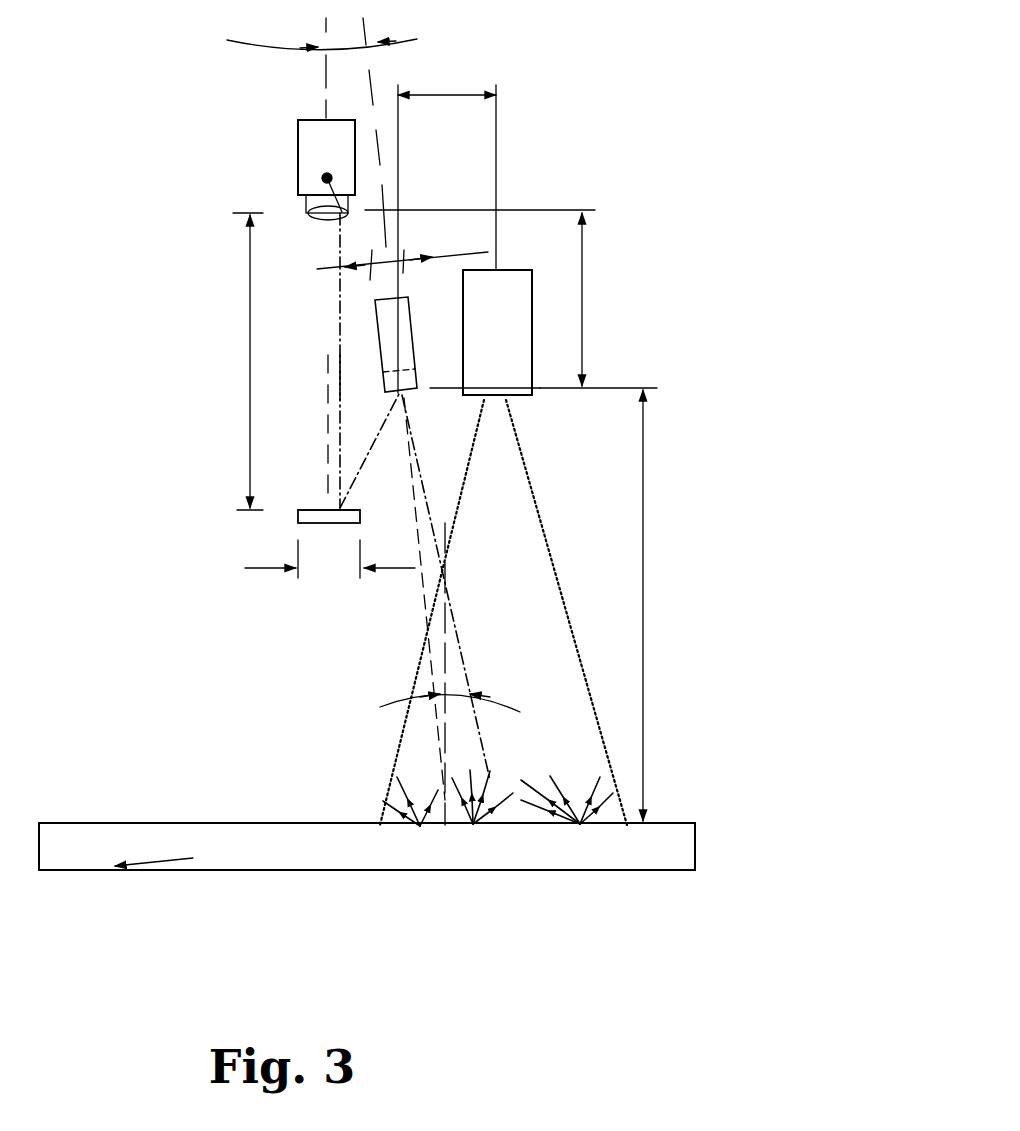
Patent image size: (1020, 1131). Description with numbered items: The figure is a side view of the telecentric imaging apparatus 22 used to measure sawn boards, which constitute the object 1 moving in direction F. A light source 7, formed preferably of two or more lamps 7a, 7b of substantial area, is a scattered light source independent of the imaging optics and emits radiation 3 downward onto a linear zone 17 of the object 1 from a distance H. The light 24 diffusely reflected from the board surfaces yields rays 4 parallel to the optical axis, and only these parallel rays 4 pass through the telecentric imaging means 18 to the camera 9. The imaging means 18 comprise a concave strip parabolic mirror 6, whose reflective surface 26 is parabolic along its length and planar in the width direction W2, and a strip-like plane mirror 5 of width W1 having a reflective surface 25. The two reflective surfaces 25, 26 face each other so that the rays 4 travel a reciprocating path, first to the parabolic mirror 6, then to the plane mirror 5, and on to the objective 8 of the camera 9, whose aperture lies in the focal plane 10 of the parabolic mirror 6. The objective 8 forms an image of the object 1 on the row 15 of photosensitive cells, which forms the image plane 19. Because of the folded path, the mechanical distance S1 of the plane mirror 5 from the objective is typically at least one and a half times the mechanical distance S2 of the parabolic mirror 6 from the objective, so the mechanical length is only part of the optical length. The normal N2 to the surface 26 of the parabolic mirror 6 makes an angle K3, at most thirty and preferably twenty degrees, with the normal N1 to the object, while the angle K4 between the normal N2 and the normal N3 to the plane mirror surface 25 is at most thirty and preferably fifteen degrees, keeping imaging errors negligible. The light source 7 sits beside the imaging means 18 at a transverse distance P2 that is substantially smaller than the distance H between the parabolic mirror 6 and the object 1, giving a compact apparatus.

The object 1 is at (657, 838).
The radiation 3 is at (563, 602).
The rays 4 is at (337, 312).
The plane mirror 5 is at (297, 516).
The parabolic mirror 6 is at (395, 327).
The light source 7 is at (539, 313).
The lamp 7a is at (497, 332).
The lamp 7b is at (497, 332).
The objective 8 is at (343, 209).
The camera 9 is at (343, 157).
The focal plane 10 is at (548, 203).
The row of photosensitive cells 15 is at (344, 156).
The linear zone 17 is at (520, 832).
The telecentric imaging means 18 is at (277, 363).
The image plane 19 is at (322, 180).
The apparatus 22 is at (640, 242).
The reflected light 24 is at (393, 790).
The reflective surface of the plane mirror 25 is at (306, 507).
The reflective surface of the parabolic mirror 26 is at (419, 397).
The angle between normals N2 and N3 K4 is at (322, 132).
The transverse distance P2 is at (447, 228).
The mechanical distance of plane mirror from objective S1 is at (238, 361).
The mechanical distance of parabolic mirror from objective S2 is at (603, 299).
The width of plane mirror W1 is at (330, 555).
The width of parabolic mirror W2 is at (402, 254).
The distance between parabolic mirror and object H is at (654, 605).
The angle between normals N2 and N1 K3 is at (463, 700).
The normal to the object N1 is at (443, 648).
The normal to the reflective surface of the parabolic mirror N2 is at (422, 603).
The normal to the reflective surface of the plane mirror N3 is at (327, 422).
The direction of movement F is at (154, 884).